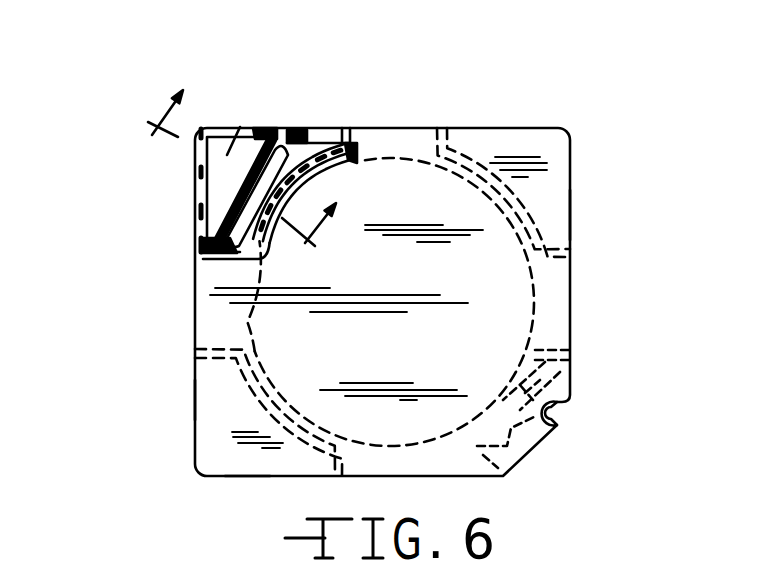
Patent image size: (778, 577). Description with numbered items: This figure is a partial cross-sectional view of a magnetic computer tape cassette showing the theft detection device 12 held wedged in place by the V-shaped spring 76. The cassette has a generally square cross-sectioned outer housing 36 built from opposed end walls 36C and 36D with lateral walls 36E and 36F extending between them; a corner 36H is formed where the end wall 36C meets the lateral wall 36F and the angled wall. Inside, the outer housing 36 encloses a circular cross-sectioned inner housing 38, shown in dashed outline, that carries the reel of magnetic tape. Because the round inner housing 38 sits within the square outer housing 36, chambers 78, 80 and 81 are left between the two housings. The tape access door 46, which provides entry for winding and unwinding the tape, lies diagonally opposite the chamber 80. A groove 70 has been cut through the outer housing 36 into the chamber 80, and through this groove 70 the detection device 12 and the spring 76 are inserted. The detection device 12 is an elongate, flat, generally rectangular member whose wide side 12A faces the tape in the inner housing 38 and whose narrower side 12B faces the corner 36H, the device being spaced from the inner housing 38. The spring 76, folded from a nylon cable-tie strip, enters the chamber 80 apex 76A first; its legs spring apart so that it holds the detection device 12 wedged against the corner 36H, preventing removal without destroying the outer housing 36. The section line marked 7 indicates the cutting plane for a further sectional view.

The section line 7- 7 is at (258, 152).
The detection device 12 is at (241, 173).
The wide side 12A is at (290, 132).
The narrower side 12B is at (276, 176).
The outer housing 36 is at (572, 175).
The end wall 36C is at (440, 130).
The end wall 36D is at (242, 476).
The lateral wall 36E is at (572, 218).
The lateral wall 36F is at (195, 400).
The corner 36H is at (197, 130).
The inner housing 38 is at (533, 317).
The access door 46 is at (532, 437).
The groove 70 is at (307, 127).
The V-shaped spring 76 is at (356, 155).
The apex 76A is at (203, 247).
The chamber 78 is at (540, 152).
The chamber 80 is at (240, 127).
The chamber 81 is at (222, 435).